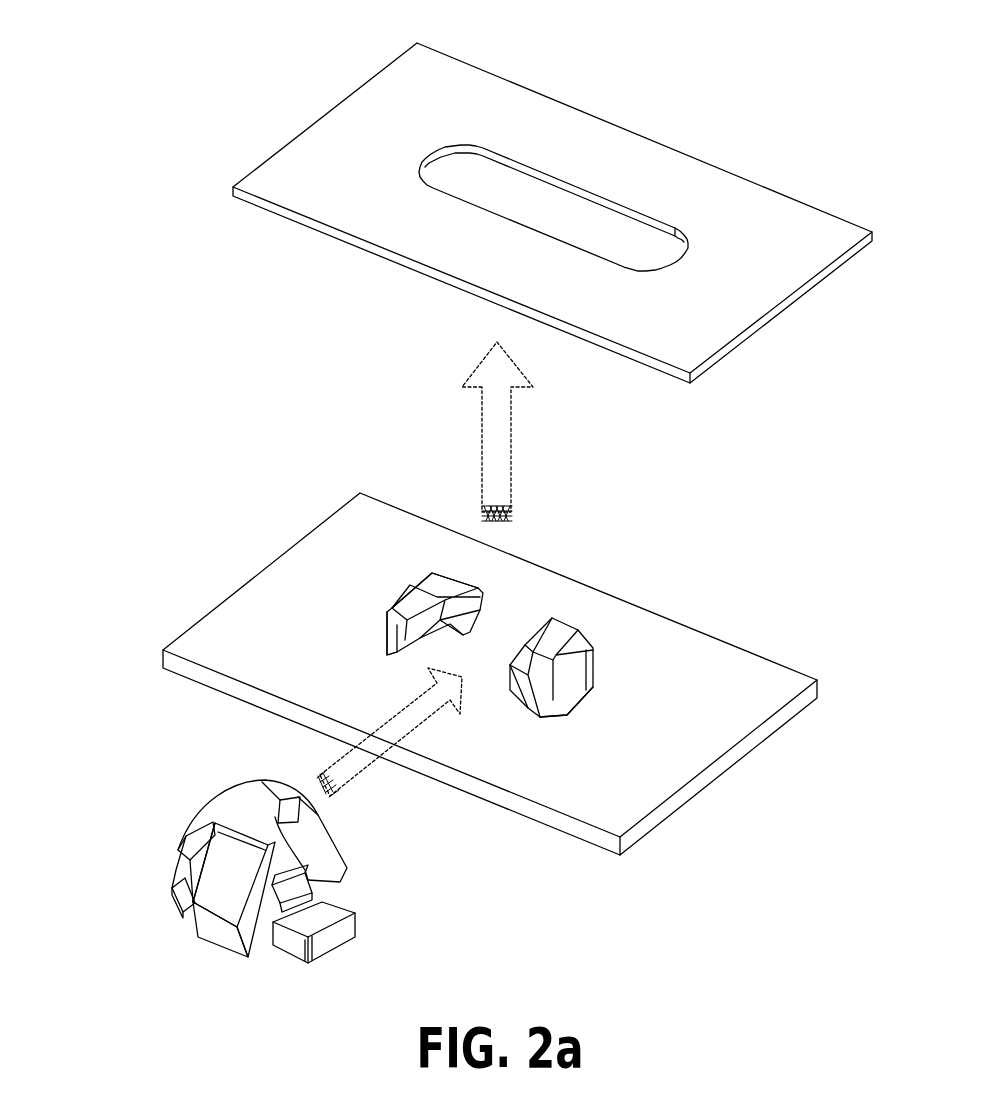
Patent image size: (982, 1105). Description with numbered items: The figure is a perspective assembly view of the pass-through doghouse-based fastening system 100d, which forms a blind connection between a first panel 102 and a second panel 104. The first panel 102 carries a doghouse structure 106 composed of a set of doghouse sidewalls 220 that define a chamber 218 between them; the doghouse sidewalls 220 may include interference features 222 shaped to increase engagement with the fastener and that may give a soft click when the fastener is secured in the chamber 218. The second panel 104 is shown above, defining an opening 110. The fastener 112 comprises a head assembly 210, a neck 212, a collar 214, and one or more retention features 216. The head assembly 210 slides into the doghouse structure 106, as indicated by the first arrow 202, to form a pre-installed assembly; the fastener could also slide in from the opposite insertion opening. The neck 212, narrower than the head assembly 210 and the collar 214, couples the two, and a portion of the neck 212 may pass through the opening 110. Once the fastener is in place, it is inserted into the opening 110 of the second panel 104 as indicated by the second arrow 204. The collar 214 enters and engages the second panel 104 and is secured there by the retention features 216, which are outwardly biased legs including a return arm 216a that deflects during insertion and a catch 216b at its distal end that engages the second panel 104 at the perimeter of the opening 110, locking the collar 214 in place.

The pass-through doghouse-based fastening system 100d is at (248, 52).
The first panel 102 is at (191, 680).
The second panel 104 is at (345, 238).
The doghouse structure 106 is at (368, 657).
The opening 110 is at (455, 147).
The fastener 112 is at (152, 819).
The first arrow 202 is at (367, 775).
The second arrow 204 is at (517, 497).
The head assembly 210 is at (313, 962).
The neck 212 is at (342, 895).
The collar 214 is at (352, 872).
The retention features 216 is at (104, 958).
The return arm 216a is at (173, 893).
The catch 216b is at (202, 923).
The chamber 218 is at (497, 640).
The doghouse sidewalls 220 is at (420, 587).
The interference features 222 is at (413, 648).